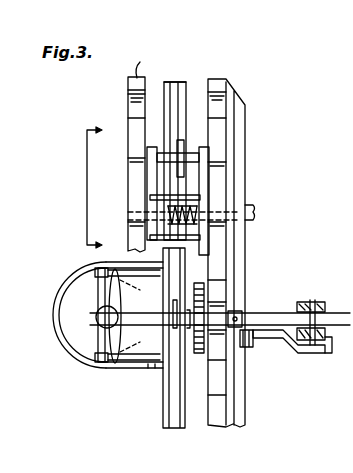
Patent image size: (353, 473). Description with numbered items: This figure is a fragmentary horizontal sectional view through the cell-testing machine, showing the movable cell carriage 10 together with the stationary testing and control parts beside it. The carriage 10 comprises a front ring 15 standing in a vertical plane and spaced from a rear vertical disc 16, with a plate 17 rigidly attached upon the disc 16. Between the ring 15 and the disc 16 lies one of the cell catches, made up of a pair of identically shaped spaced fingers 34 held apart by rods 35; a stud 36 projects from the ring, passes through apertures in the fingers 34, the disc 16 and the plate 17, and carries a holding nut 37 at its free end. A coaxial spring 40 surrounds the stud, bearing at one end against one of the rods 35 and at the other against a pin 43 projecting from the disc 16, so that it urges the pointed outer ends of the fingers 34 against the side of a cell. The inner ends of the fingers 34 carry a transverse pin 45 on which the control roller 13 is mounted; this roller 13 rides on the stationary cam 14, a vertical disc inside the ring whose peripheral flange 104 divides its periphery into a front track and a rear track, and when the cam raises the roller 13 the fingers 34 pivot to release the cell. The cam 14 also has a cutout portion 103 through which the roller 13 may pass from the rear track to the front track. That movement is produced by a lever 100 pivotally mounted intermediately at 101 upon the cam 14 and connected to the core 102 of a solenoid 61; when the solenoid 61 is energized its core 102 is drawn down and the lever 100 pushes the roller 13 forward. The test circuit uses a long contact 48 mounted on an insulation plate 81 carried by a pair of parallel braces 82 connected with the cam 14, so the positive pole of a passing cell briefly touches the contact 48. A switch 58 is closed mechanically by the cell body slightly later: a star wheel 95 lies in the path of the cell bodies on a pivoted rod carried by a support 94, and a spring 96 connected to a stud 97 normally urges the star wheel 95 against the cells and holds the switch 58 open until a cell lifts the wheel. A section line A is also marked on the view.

The movable cell carriage 10 is at (128, 98).
The control roller 13 is at (184, 150).
The cam 14 is at (178, 110).
The front ring 15 is at (147, 65).
The rear vertical disc 16 is at (222, 127).
The plate 17 is at (240, 403).
The fingers 34 is at (205, 158).
The rods 35 is at (160, 192).
The stud 36 is at (160, 212).
The holding nut 37 is at (254, 212).
The coaxial spring 40 is at (200, 210).
The pin 43 is at (166, 272).
The transverse pin 45 is at (160, 160).
The long contact 48 is at (116, 364).
The switch 58 is at (242, 311).
The solenoid 61 is at (60, 318).
The insulation plate 81 is at (98, 330).
The parallel braces 82 is at (97, 360).
The support 94 is at (312, 302).
The star wheel 95 is at (204, 292).
The spring 96 is at (247, 347).
The stud 97 is at (284, 340).
The lever 100 is at (140, 297).
The pivot 101 is at (172, 320).
The core 102 is at (112, 322).
The cutout portion 103 is at (163, 378).
The peripheral flange 104 is at (171, 84).
The section line A is at (81, 187).